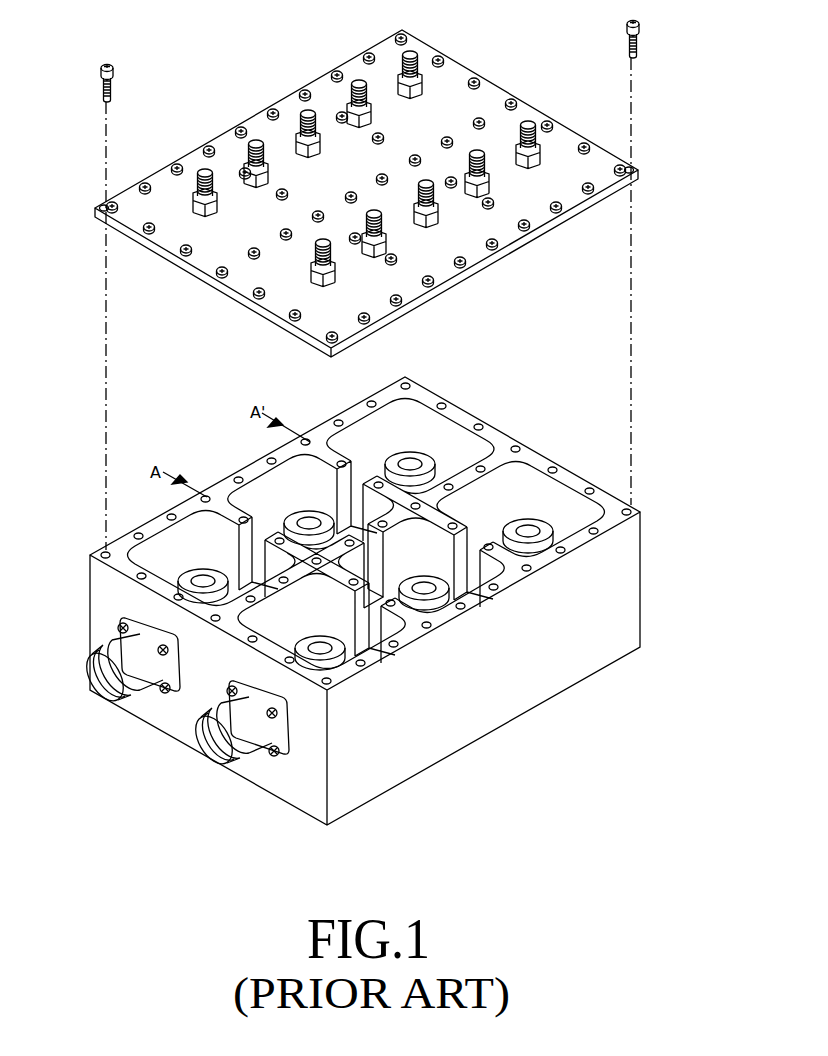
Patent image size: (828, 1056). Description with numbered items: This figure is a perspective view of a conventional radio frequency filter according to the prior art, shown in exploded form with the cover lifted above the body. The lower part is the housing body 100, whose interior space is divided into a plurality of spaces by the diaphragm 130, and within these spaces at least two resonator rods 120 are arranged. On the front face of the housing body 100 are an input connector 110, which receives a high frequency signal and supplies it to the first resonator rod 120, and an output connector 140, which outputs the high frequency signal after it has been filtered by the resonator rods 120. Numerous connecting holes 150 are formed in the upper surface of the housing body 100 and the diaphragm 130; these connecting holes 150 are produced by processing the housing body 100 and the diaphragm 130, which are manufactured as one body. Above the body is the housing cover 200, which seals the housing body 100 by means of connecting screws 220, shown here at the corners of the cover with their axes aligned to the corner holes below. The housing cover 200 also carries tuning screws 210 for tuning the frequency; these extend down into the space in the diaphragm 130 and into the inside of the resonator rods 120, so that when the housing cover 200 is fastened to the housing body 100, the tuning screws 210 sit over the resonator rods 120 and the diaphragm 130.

The housing body 100 is at (425, 723).
The input connector 110 is at (150, 668).
The resonator rod 120 is at (207, 577).
The diaphragm 130 is at (442, 487).
The output connector 140 is at (260, 737).
The connecting hole 150 is at (632, 508).
The housing cover 200 is at (457, 78).
The tuning screw 210 is at (310, 113).
The connecting screw 220 is at (108, 66).